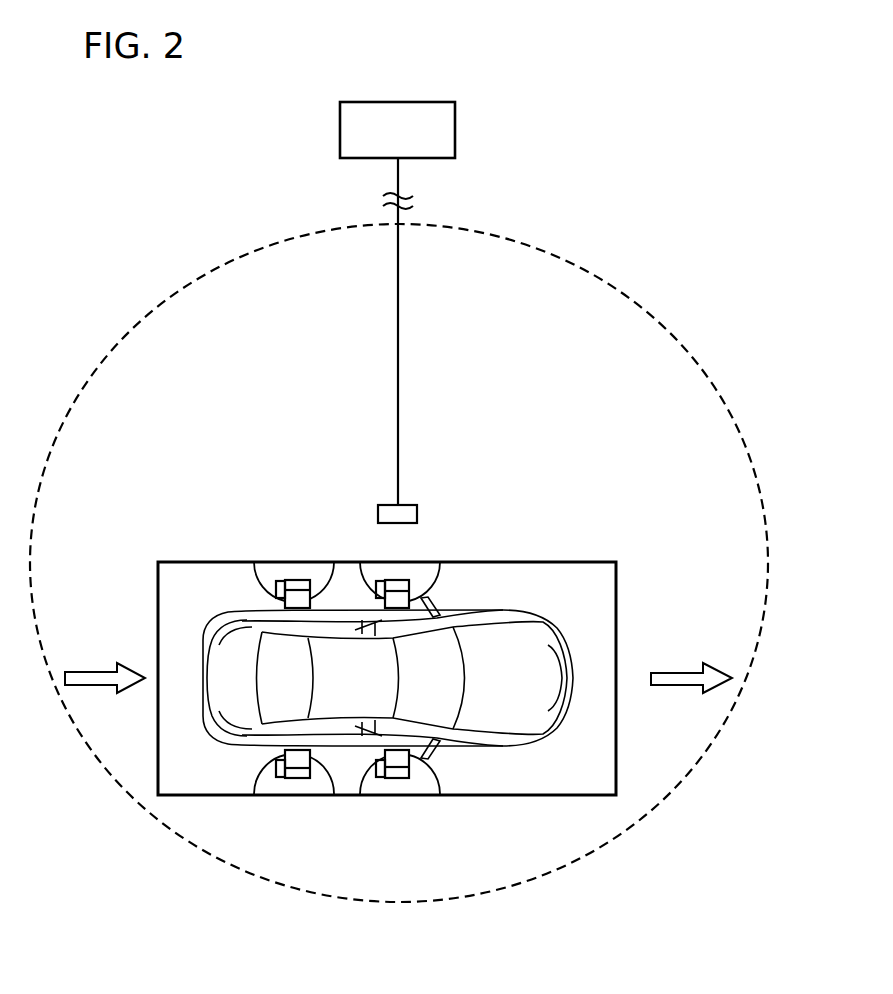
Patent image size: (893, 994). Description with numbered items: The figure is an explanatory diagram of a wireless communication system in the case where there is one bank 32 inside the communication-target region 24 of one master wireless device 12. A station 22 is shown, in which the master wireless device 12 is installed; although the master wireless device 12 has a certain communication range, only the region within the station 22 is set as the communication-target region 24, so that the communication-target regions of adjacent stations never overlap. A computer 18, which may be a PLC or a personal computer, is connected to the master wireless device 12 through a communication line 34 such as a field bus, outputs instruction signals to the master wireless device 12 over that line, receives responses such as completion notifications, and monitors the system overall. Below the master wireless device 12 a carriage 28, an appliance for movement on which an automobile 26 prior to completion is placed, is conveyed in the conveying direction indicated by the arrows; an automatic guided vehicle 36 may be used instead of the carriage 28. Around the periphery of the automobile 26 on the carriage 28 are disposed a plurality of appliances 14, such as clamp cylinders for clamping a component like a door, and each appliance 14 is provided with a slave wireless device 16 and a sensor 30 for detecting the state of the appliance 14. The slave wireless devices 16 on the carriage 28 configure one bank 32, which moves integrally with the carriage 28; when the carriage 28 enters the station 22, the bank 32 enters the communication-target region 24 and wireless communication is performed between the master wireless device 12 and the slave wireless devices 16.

The master wireless device 12 is at (408, 505).
The appliance 14 is at (333, 568).
The slave wireless device 16 is at (294, 580).
The computer 18 is at (396, 102).
The station 22 is at (399, 548).
The communication-target region 24 is at (612, 287).
The automobile 26 is at (522, 750).
The carriage 28 is at (405, 654).
The sensor 30 is at (257, 581).
The bank 32 is at (405, 640).
The communication line 34 is at (400, 348).
The automatic guided vehicle 36 is at (556, 562).